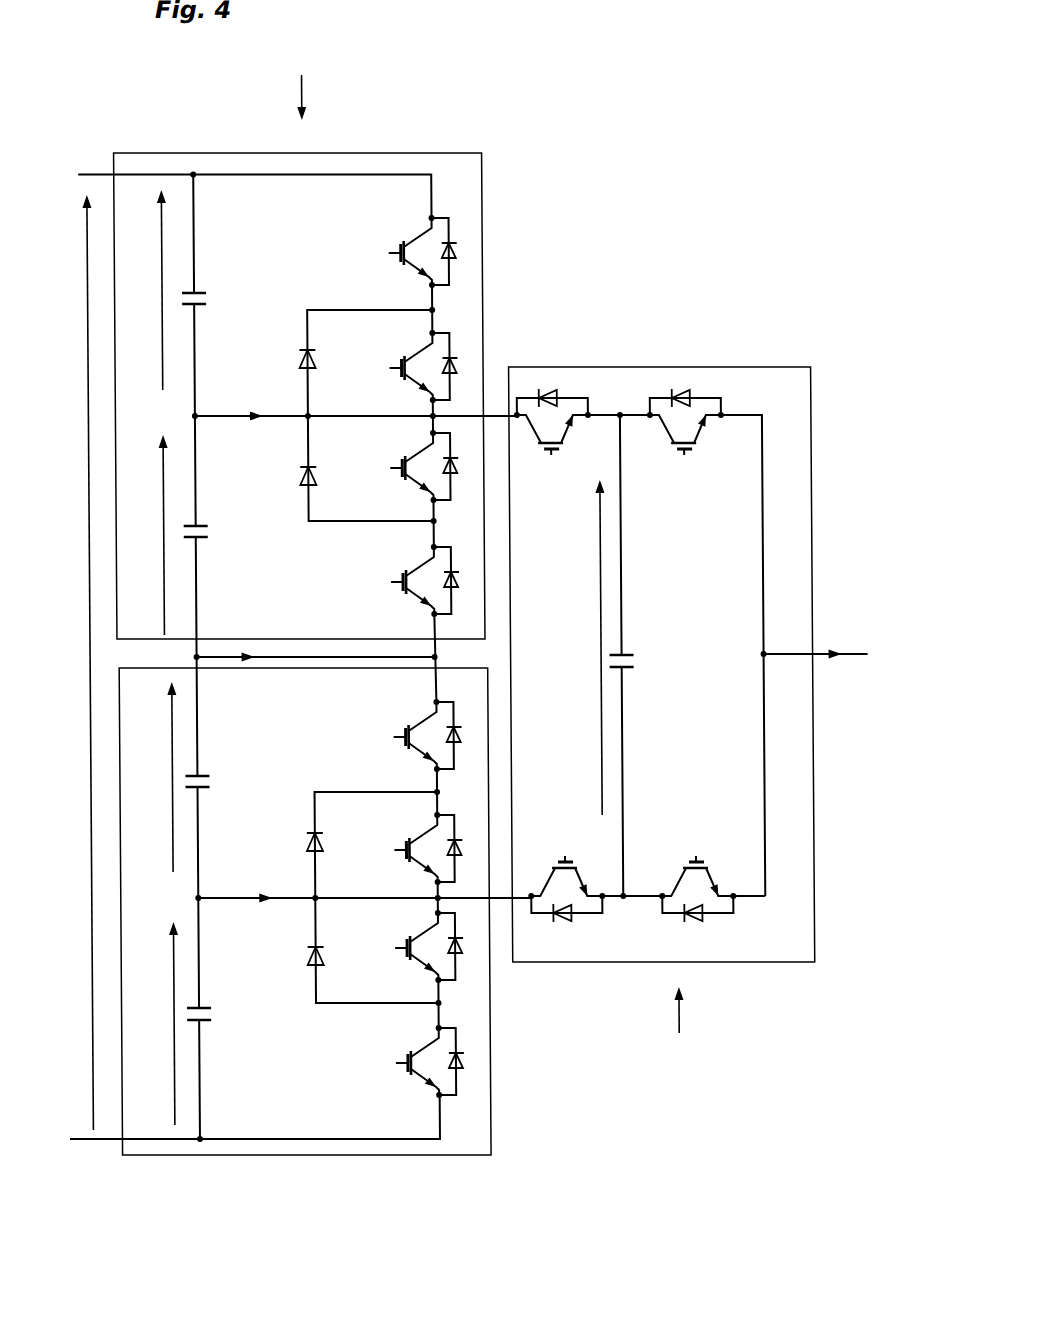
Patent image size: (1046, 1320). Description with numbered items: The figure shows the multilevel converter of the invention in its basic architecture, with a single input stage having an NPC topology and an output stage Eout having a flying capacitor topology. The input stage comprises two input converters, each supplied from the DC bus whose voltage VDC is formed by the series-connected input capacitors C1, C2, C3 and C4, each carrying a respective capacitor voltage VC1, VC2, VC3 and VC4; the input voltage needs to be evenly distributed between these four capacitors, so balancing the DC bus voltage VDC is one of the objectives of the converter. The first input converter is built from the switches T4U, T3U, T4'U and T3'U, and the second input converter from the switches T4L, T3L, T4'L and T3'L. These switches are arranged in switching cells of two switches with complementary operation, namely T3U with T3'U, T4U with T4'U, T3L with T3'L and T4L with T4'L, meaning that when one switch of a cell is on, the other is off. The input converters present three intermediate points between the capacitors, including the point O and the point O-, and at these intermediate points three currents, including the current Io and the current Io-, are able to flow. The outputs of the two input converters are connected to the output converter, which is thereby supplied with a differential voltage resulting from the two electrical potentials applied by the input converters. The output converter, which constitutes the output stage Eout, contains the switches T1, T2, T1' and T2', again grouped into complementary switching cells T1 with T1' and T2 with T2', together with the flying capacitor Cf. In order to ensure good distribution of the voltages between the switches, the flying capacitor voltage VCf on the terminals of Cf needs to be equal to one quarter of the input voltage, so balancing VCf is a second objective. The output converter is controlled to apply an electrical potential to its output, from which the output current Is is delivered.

The switch T4U is at (414, 249).
The switch T3U is at (411, 364).
The switch T4'U is at (413, 464).
The switch T3'U is at (411, 580).
The switch T4L is at (417, 733).
The switch T3L is at (422, 847).
The switch T4'L is at (422, 945).
The switch T3'L is at (416, 1061).
The switch T1 is at (686, 437).
The switch T2 is at (553, 437).
The switch T1' is at (698, 874).
The switch T2' is at (567, 874).
The input capacitor C1 is at (211, 303).
The input capacitor C2 is at (212, 533).
The input capacitor C3 is at (216, 785).
The input capacitor C4 is at (217, 1015).
The flying capacitor Cf is at (635, 665).
The DC bus voltage VDC is at (77, 662).
The voltage of capacitor C1 VC1 is at (154, 290).
The voltage of capacitor C2 VC2 is at (156, 535).
The voltage of capacitor C3 VC3 is at (170, 777).
The voltage of capacitor C4 VC4 is at (171, 1023).
The flying capacitor voltage VCf is at (590, 647).
The intermediate point O is at (300, 655).
The intermediate point O- is at (348, 897).
The current Io is at (237, 644).
The current Io- is at (255, 882).
The output current Is is at (815, 639).
The output stage Eout is at (681, 1029).